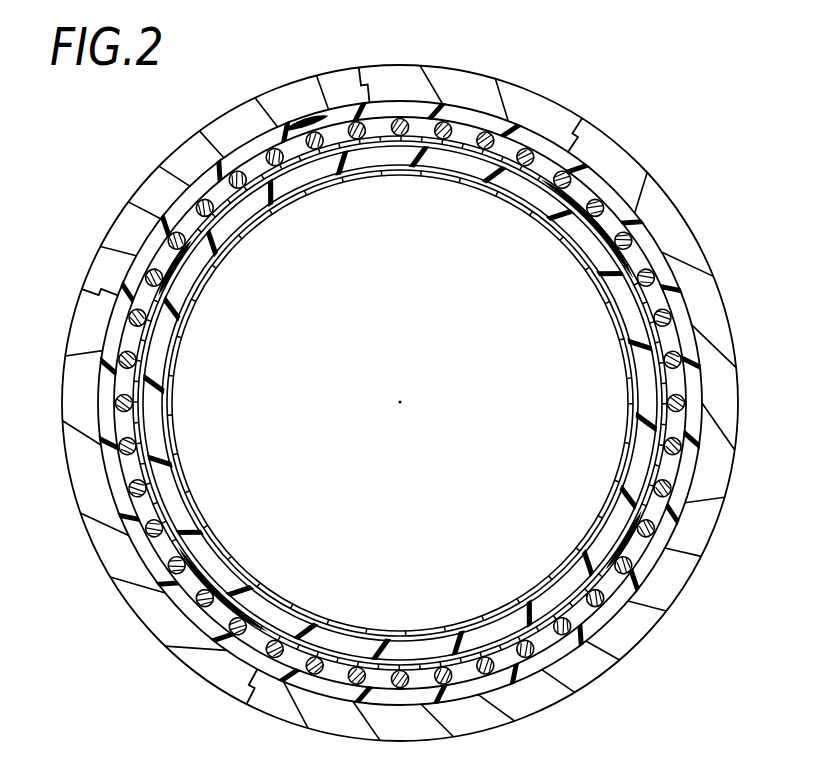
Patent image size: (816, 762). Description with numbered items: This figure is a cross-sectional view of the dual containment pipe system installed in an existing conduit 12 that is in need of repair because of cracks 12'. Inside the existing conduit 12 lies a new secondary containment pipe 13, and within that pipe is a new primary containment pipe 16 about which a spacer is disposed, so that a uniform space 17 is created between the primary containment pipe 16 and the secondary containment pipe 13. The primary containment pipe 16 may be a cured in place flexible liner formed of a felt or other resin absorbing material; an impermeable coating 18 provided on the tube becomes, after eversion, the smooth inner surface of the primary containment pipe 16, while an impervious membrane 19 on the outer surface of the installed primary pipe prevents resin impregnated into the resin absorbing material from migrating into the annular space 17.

The existing conduit 12 is at (400, 381).
The cracks 12' is at (367, 355).
The secondary containment pipe 13 is at (637, 196).
The primary containment pipe 16 is at (528, 190).
The uniform space 17 is at (507, 147).
The impermeable coating 18 is at (408, 172).
The impervious membrane 19 is at (343, 148).